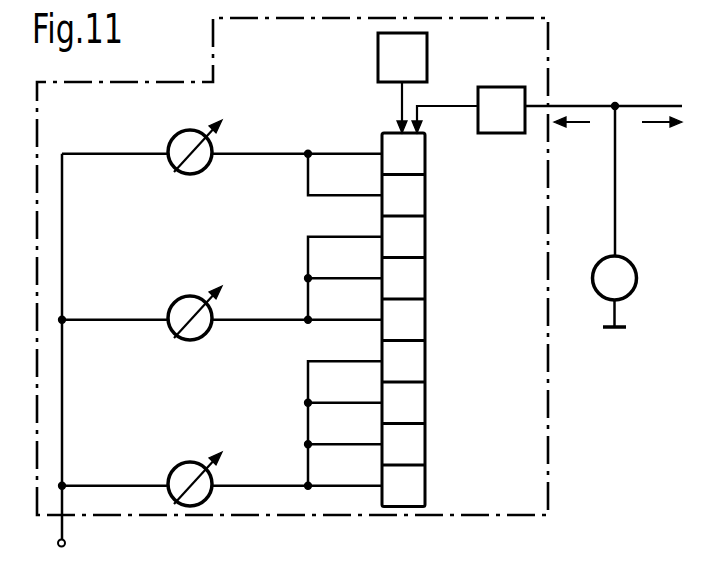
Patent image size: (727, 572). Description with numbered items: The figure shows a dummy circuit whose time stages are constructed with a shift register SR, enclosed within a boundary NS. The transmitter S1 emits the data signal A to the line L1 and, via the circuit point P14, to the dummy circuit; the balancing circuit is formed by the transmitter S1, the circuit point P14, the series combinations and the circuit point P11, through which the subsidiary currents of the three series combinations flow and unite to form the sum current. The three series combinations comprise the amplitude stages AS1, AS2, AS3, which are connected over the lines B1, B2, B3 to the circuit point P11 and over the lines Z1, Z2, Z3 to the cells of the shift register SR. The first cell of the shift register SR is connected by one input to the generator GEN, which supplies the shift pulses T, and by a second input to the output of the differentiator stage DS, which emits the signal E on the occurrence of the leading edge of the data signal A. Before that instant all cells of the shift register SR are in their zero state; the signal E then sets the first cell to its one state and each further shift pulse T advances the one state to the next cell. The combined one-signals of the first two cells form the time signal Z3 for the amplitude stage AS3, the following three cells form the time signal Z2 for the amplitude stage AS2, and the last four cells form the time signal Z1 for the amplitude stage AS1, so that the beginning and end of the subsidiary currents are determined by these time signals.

The network station / control unit boundary NS is at (548, 424).
The circuit point P11 is at (76, 356).
The line B3 is at (115, 139).
The line B2 is at (115, 305).
The line B1 is at (115, 470).
The amplitude stage AS3 is at (195, 137).
The amplitude stage AS2 is at (195, 303).
The amplitude stage AS1 is at (194, 470).
The time signal Z3 is at (297, 159).
The time signal Z2 is at (297, 280).
The time signal Z1 is at (297, 425).
The shift register SR is at (417, 320).
The generator GEN is at (402, 57).
The shift pulses T is at (398, 107).
The signal E is at (445, 105).
The differentiator stage DS is at (501, 110).
The line L1 is at (603, 91).
The circuit point P14 is at (611, 93).
The data signal A is at (618, 126).
The transmitter S1 is at (615, 216).